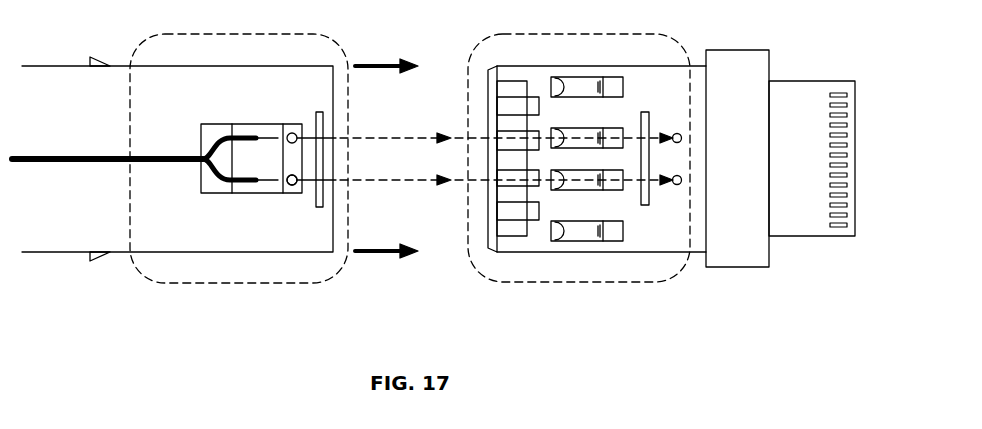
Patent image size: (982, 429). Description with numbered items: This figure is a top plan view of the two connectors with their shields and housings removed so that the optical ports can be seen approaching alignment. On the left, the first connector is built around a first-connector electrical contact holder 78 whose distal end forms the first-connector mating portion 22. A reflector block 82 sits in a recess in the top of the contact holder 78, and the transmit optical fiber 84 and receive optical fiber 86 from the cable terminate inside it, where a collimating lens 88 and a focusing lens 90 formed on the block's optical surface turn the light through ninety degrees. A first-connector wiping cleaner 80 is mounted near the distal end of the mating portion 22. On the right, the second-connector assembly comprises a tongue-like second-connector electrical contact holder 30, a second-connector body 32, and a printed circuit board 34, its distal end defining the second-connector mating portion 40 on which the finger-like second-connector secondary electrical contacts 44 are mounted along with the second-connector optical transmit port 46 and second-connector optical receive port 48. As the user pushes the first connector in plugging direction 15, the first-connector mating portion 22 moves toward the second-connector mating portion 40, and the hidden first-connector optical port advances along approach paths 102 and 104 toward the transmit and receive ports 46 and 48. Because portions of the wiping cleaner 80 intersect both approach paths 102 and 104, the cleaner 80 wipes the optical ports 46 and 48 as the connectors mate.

The first-connector electrical contact holder 78 is at (78, 64).
The first-connector mating portion 22 is at (237, 285).
The transmit optical fiber 84 is at (220, 137).
The receive optical fiber 86 is at (213, 176).
The reflector block 82 is at (253, 126).
The focusing lens 90 is at (294, 133).
The collimating lens 88 is at (290, 186).
The first-connector wiping cleaner 80 is at (320, 208).
The plugging direction 15 is at (371, 62).
The approach path 102 is at (388, 136).
The approach path 104 is at (390, 184).
The second-connector mating portion 40 is at (618, 284).
The second-connector electrical contact holder 30 is at (645, 63).
The second-connector secondary electrical contacts 44 is at (512, 83).
The second-connector optical transmit port 46 is at (567, 130).
The second-connector optical receive port 48 is at (678, 186).
The second-connector body 32 is at (742, 268).
The printed circuit board 34 is at (812, 238).